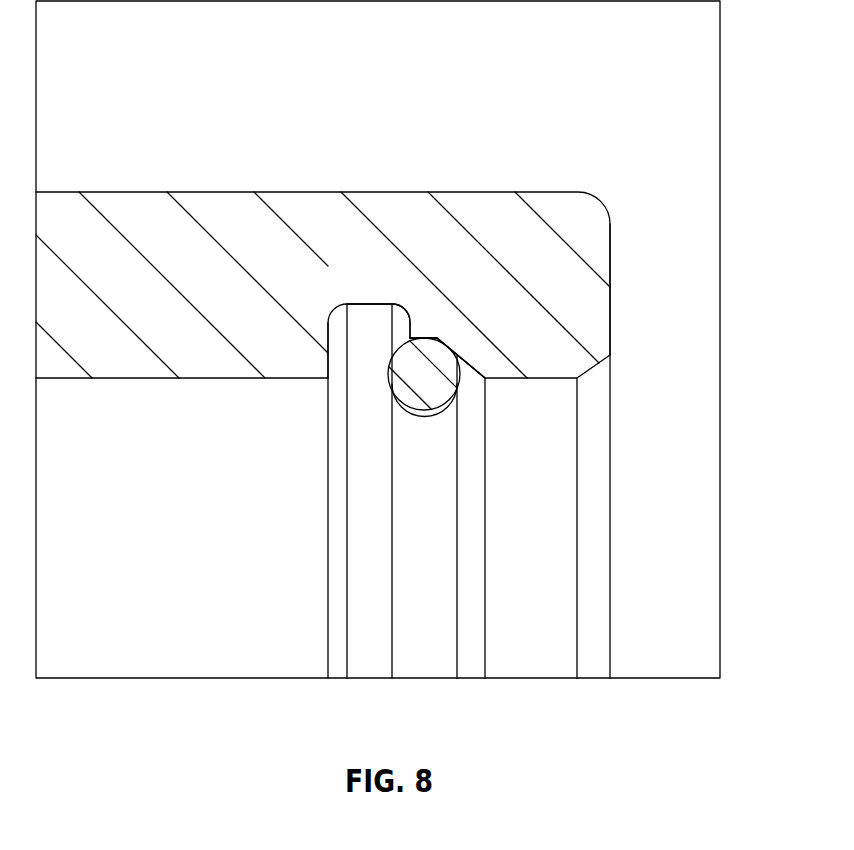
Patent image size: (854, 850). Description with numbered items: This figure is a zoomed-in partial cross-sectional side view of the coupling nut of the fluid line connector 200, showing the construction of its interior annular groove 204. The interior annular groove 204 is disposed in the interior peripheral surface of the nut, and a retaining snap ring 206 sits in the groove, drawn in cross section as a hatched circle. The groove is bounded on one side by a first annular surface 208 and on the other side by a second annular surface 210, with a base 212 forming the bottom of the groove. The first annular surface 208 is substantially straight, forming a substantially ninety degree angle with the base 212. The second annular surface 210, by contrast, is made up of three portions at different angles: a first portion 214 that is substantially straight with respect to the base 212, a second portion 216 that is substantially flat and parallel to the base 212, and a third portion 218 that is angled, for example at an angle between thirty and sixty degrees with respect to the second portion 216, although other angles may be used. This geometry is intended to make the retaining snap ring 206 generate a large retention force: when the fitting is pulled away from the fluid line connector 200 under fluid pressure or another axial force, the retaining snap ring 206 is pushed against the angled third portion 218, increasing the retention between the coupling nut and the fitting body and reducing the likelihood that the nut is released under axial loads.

The fluid line connector 200 is at (162, 190).
The interior annular groove 204 is at (369, 322).
The retaining snap ring 206 is at (413, 406).
The first annular surface 208 is at (316, 339).
The second annular surface 210 is at (447, 331).
The base 212 is at (378, 303).
The first portion 214 is at (427, 338).
The second portion 216 is at (412, 338).
The third portion 218 is at (458, 358).